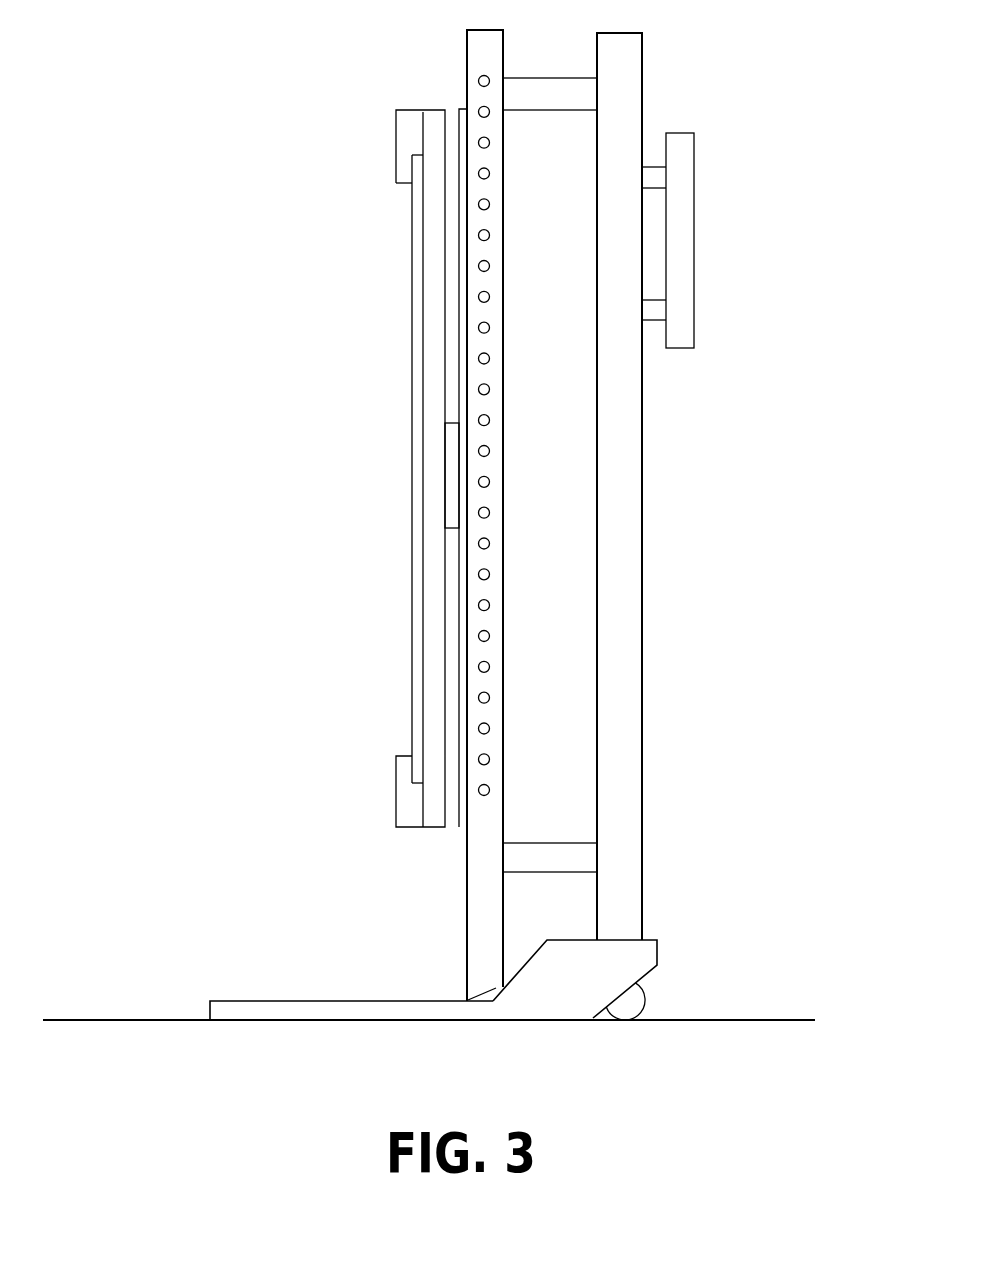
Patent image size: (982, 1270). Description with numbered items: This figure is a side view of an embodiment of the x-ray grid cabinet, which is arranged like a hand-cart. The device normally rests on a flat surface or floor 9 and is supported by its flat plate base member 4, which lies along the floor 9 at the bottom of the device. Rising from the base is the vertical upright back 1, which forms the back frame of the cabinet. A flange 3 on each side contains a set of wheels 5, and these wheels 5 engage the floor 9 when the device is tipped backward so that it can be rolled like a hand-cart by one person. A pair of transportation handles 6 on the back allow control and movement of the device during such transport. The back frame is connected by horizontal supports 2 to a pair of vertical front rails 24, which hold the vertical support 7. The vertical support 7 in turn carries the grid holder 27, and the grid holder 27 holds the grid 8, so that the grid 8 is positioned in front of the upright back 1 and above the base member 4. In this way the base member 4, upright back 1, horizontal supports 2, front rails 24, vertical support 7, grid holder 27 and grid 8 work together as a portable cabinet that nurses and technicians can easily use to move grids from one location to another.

The vertical upright back 1 is at (620, 500).
The horizontal supports 2 is at (555, 117).
The flange 3 is at (580, 986).
The flat plate base member 4 is at (317, 988).
The wheels 5 is at (657, 989).
The transportation handles 6 is at (698, 209).
The vertical support 7 is at (462, 362).
The grid 8 is at (420, 462).
The floor 9 is at (98, 1025).
The vertical front rails 24 is at (488, 715).
The grid holder 27 is at (430, 331).